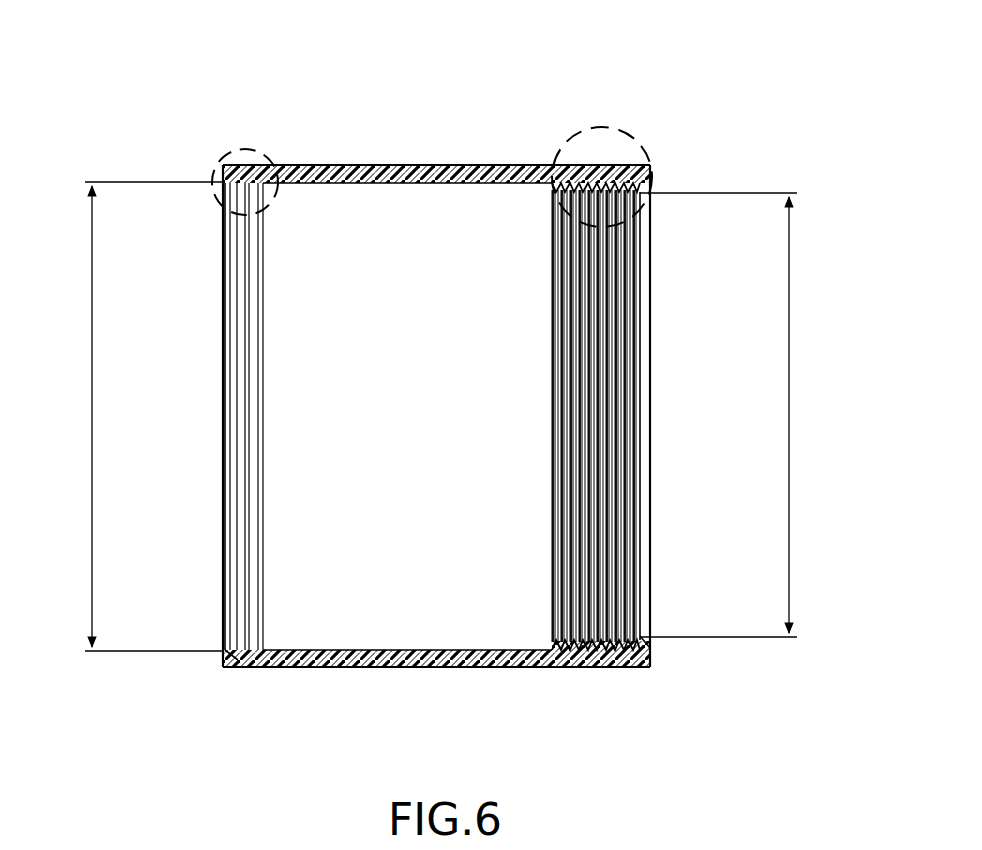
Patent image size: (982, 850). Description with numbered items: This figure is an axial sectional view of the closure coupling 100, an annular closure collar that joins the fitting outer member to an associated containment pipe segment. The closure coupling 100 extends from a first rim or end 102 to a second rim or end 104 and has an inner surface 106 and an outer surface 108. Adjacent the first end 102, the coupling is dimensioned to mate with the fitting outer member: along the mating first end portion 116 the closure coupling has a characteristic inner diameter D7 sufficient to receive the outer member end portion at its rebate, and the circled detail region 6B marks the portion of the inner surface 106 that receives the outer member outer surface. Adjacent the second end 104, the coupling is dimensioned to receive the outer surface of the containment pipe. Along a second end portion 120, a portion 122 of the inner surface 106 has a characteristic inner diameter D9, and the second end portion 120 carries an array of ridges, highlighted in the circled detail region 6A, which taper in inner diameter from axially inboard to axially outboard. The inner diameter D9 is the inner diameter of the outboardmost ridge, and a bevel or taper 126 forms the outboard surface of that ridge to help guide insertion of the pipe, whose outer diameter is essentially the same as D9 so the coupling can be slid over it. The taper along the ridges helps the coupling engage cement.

The closure coupling 100 is at (442, 479).
The first rim/end 102 is at (225, 475).
The second rim/end 104 is at (650, 555).
The inner surface 106 is at (385, 648).
The outer surface 108 is at (490, 667).
The first end portion 116 is at (224, 668).
The second end portion 120 is at (606, 655).
The portion of the inner surface 122 is at (558, 498).
The bevel/taper 126 is at (642, 293).
The detail view 6A is at (634, 132).
The detail view 6B is at (215, 148).
The characteristic ID of first end portion D7 is at (92, 420).
The characteristic ID of second end portion D9 is at (792, 418).